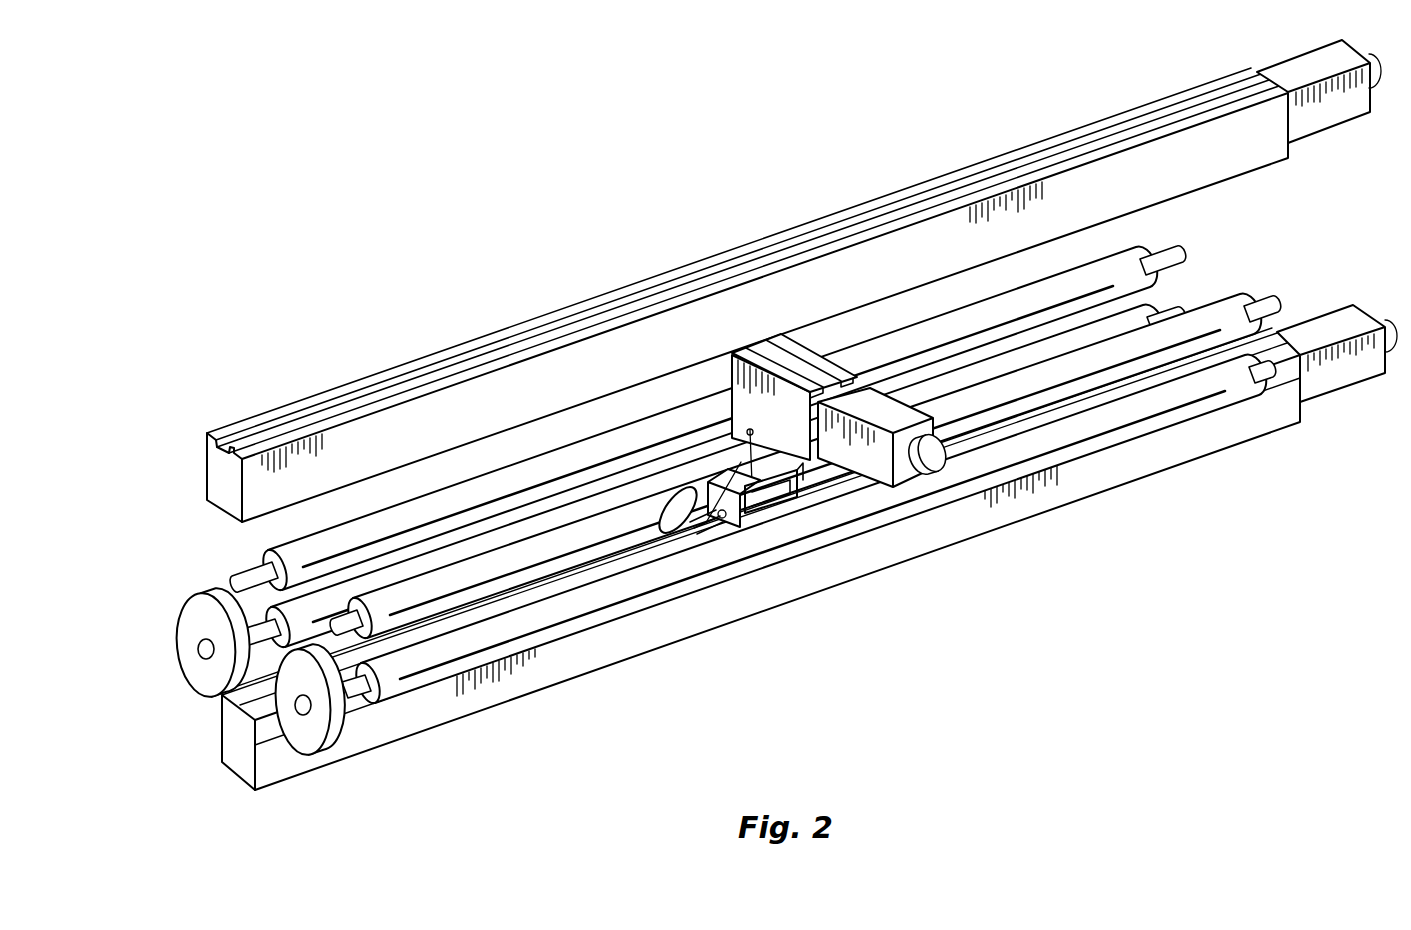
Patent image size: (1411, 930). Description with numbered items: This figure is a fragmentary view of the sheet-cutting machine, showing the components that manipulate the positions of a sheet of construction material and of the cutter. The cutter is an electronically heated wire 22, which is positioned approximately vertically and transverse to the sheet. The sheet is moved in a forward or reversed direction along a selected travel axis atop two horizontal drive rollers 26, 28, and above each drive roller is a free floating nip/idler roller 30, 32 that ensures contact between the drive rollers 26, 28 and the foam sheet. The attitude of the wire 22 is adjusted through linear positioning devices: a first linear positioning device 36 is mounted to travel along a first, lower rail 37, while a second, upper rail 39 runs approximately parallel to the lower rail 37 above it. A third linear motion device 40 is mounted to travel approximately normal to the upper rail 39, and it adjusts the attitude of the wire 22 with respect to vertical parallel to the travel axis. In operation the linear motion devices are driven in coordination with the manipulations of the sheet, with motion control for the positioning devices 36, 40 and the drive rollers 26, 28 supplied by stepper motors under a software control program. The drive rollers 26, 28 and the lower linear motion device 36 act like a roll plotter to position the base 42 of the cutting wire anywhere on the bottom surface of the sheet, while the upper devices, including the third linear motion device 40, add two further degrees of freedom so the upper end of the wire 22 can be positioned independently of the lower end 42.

The electronically heated wire 22 is at (700, 530).
The drive roller 26 is at (371, 703).
The drive roller 28 is at (213, 600).
The nip/idler roller 30 is at (372, 637).
The nip/idler roller 32 is at (265, 558).
The first linear positioning device 36 is at (805, 468).
The first, lower rail 37 is at (235, 737).
The second, upper rail 39 is at (207, 447).
The third linear motion device 40 is at (733, 381).
The base of the cutting wire 42 is at (773, 512).